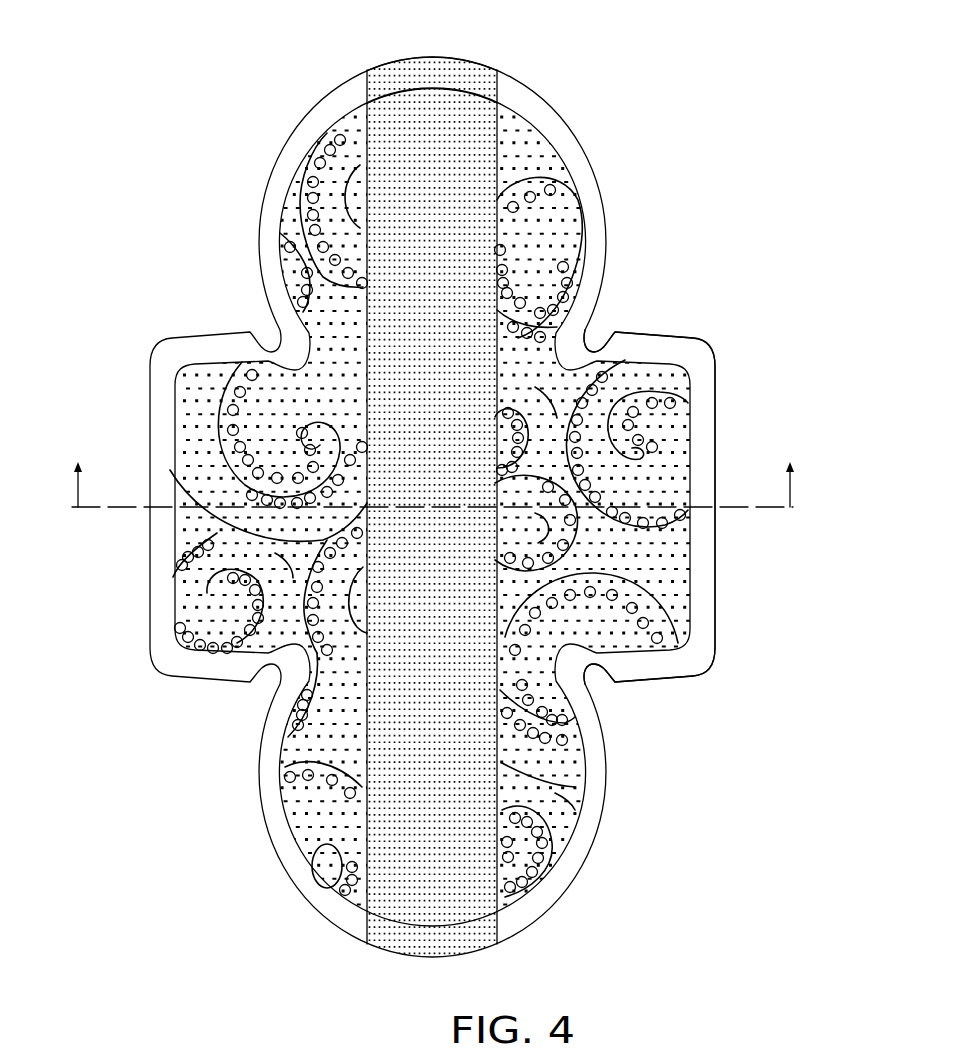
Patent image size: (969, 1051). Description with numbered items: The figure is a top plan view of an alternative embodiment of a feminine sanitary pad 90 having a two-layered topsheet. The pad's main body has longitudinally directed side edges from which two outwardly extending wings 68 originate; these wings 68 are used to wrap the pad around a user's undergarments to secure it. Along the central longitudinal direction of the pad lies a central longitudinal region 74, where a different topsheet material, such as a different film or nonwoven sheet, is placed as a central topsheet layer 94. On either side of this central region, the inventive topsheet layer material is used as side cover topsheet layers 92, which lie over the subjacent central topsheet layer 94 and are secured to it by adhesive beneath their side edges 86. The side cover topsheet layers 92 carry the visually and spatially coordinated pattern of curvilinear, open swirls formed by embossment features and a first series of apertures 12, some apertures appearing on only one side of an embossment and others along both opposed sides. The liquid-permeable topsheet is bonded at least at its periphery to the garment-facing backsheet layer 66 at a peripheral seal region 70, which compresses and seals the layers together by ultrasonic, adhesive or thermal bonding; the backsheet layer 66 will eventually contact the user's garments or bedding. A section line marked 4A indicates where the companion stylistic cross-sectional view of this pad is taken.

The first series of apertures 12 is at (325, 152).
The backsheet layer 66 is at (588, 242).
The wings 68 is at (708, 603).
The peripheral seal region 70 is at (594, 189).
The central longitudinal region 74 is at (440, 905).
The side edges 86 is at (437, 103).
The sanitary pad 90 is at (568, 66).
The side cover topsheet layers 92 is at (548, 163).
The central topsheet layer 94 is at (390, 920).
The section line 4A is at (427, 493).